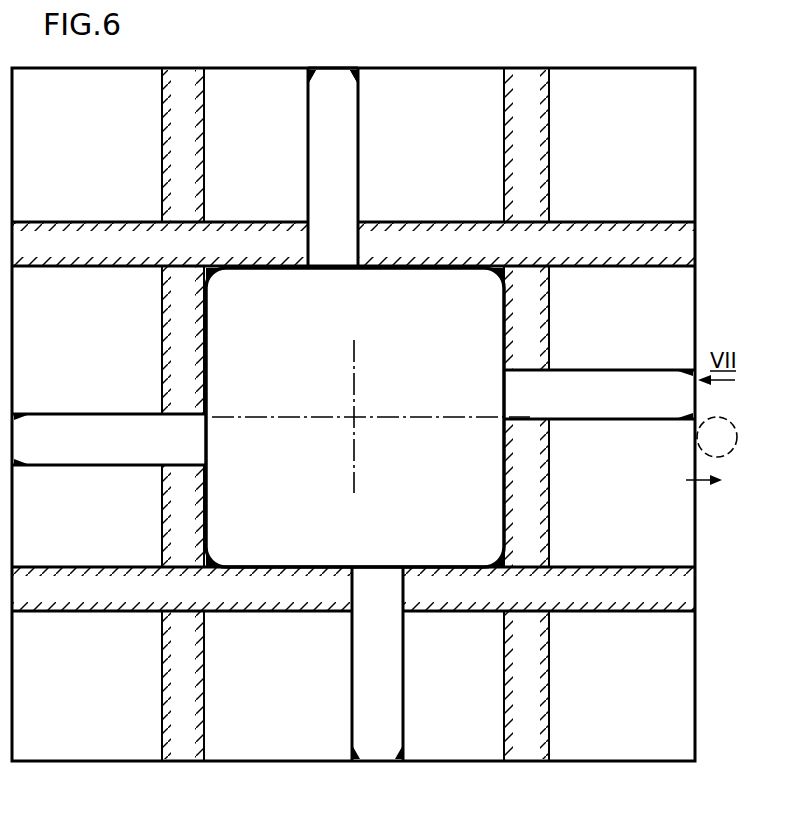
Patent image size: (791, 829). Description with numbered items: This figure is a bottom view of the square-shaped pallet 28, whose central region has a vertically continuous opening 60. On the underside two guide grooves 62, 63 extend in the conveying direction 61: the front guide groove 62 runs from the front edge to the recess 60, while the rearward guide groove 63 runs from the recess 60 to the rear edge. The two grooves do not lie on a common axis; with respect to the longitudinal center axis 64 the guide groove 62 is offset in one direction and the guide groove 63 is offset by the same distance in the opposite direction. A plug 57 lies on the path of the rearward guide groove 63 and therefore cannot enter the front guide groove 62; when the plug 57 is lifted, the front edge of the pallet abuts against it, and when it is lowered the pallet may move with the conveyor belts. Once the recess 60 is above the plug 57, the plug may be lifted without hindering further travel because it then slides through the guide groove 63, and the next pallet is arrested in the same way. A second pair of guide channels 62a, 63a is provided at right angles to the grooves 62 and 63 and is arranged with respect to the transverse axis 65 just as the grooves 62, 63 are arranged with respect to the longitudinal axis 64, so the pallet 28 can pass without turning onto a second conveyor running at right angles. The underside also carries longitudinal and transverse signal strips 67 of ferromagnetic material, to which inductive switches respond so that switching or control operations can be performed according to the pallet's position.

The pallet 28 is at (346, 64).
The plug 57 is at (730, 456).
The opening 60 is at (505, 327).
The conveying direction 61 is at (703, 484).
The guide groove 62 is at (600, 378).
The guide channel 62a is at (380, 742).
The guide groove 63 is at (88, 423).
The guide channel 63a is at (321, 107).
The longitudinal center axis 64 is at (268, 417).
The transverse axis 65 is at (356, 362).
The signal strips 67 is at (540, 178).